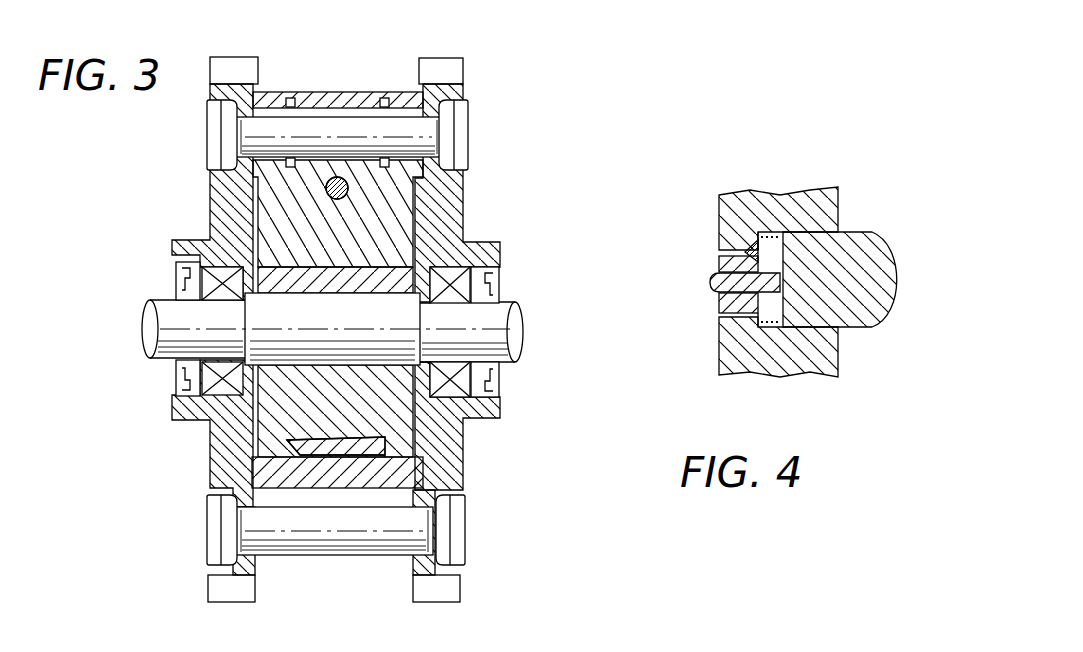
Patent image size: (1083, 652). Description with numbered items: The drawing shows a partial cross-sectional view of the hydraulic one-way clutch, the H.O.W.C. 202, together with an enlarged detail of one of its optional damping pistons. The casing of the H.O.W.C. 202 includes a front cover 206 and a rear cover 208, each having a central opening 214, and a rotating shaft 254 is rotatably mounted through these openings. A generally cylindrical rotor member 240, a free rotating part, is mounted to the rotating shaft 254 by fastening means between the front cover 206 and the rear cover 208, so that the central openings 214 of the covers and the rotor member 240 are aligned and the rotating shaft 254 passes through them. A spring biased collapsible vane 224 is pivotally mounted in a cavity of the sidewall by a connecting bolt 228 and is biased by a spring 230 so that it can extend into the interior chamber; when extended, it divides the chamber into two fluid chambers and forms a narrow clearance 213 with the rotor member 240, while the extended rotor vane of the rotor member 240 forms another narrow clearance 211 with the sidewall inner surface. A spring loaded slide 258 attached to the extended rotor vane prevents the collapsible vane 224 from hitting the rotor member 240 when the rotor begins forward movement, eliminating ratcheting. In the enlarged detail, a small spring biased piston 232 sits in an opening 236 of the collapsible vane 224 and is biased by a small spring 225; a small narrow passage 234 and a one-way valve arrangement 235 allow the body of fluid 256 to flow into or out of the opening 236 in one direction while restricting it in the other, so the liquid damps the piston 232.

In FIG. 3, the H.O.W.C. 202 is at (548, 106).
In FIG. 3, the front cover 206 is at (208, 473).
In FIG. 3, the rear cover 208 is at (462, 457).
In FIG. 3, the narrow clearance 211 is at (245, 422).
In FIG. 3, the narrow clearance 213 is at (287, 265).
In FIG. 3, the central opening 214 is at (167, 360).
In FIG. 3, the collapsible vane 224 is at (398, 228).
In FIG. 4, the collapsible vane 224 is at (747, 363).
In FIG. 4, the small spring 225 is at (773, 236).
In FIG. 3, the connecting bolt 228 is at (392, 127).
In FIG. 3, the spring 230 is at (288, 97).
In FIG. 3, the spring biased piston 232 is at (338, 178).
In FIG. 4, the spring biased piston 232 is at (866, 307).
In FIG. 4, the small narrow passage 234 is at (718, 312).
In FIG. 4, the one-way valve arrangement 235 is at (756, 244).
In FIG. 4, the opening 236 is at (838, 230).
In FIG. 3, the rotor member 240 is at (398, 280).
In FIG. 3, the rotating shaft 254 is at (503, 310).
In FIG. 4, the body of fluid 256 is at (767, 302).
In FIG. 3, the spring loaded slide 258 is at (460, 485).